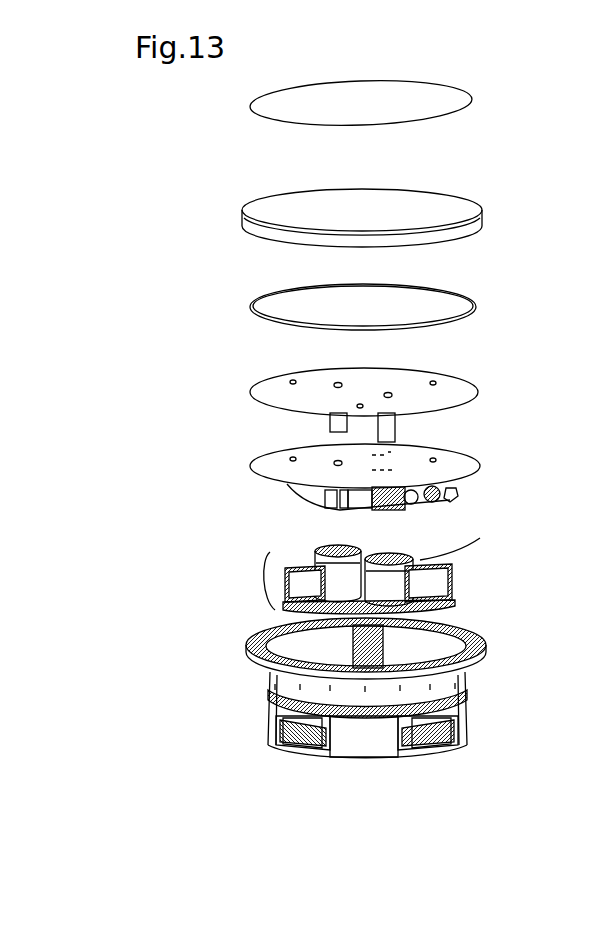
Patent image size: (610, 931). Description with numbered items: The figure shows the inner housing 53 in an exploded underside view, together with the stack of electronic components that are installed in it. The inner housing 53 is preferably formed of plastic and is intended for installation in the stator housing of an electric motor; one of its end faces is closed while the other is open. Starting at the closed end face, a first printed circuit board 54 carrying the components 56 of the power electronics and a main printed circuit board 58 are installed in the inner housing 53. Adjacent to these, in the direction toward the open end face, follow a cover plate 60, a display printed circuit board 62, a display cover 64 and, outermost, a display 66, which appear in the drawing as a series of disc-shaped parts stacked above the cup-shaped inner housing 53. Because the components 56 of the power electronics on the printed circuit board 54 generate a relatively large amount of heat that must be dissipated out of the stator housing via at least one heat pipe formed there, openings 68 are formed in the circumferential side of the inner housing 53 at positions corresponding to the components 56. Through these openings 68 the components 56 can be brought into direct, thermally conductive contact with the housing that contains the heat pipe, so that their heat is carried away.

The display 66 is at (258, 108).
The display cover 64 is at (250, 213).
The display printed circuit board 62 is at (268, 311).
The cover plate 60 is at (262, 390).
The main printed circuit board 58 is at (462, 478).
The components of the power electronics 56 is at (318, 557).
The first printed circuit board 54 is at (318, 608).
The inner housing 53 is at (465, 683).
The openings 68 is at (290, 745).